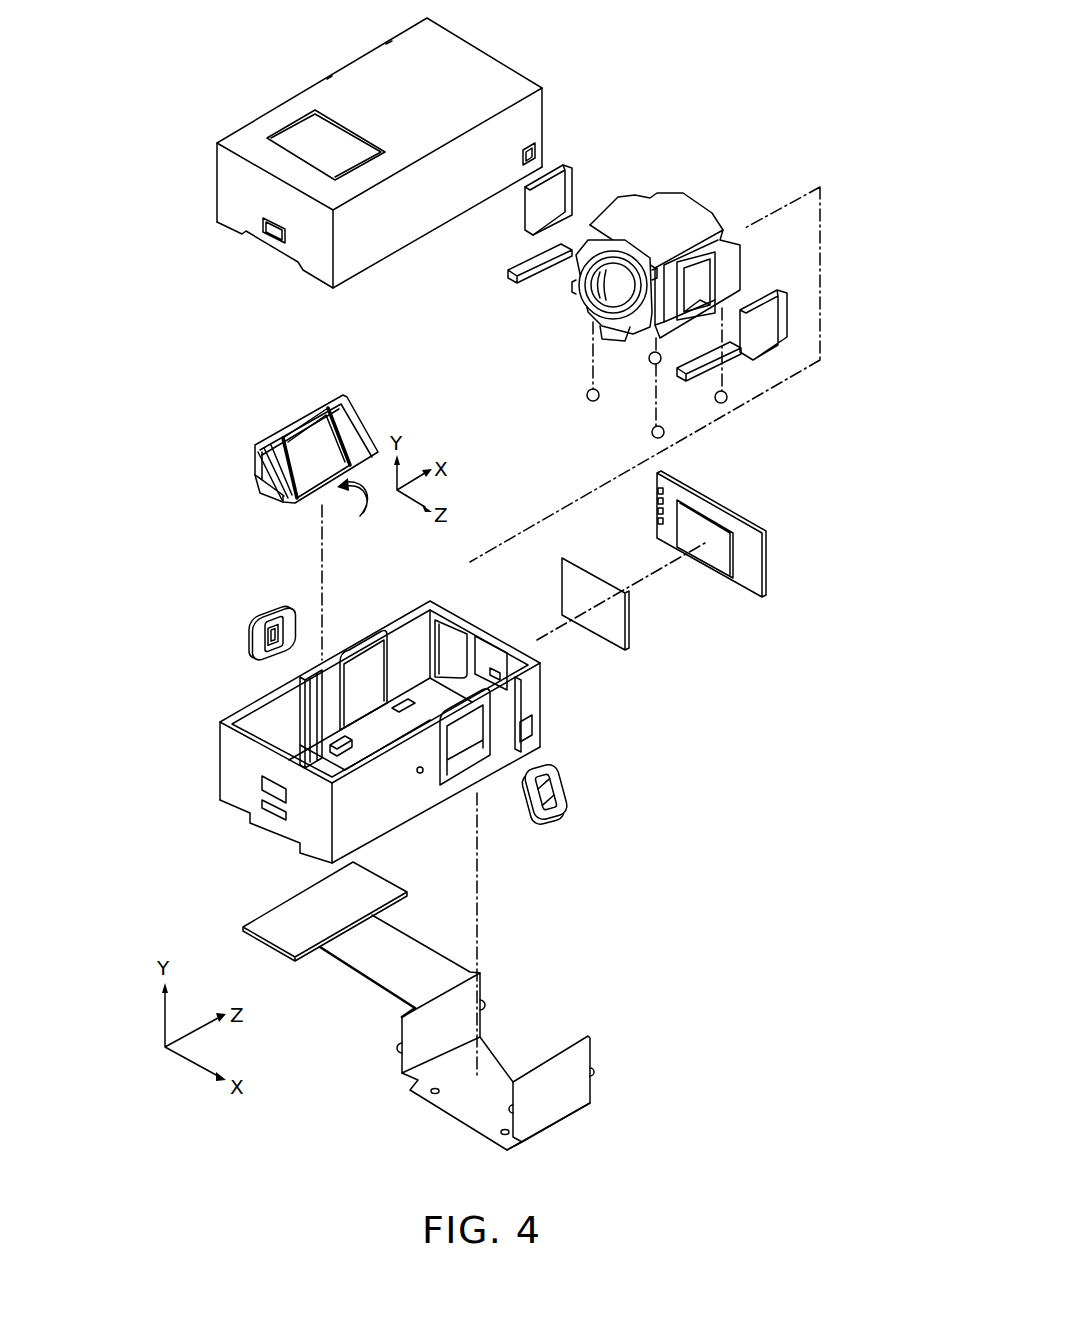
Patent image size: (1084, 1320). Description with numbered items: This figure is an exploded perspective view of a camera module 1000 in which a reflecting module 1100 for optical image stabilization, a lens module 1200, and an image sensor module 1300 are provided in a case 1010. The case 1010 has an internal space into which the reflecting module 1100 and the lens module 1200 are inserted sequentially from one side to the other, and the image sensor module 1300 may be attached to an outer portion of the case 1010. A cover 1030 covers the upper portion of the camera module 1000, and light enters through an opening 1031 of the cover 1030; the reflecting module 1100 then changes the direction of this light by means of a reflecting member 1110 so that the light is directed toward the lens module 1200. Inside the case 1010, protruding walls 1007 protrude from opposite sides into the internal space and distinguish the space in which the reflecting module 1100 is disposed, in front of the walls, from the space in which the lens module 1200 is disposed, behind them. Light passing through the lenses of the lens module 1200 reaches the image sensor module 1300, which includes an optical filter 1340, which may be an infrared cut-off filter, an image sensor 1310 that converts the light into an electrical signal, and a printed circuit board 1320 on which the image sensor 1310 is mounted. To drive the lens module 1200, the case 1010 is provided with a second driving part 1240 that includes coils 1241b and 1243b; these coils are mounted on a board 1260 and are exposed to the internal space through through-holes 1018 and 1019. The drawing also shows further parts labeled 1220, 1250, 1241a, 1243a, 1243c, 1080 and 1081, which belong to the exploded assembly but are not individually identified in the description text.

The camera module 1000 is at (192, 29).
The cover 1030 is at (503, 75).
The opening 1031 is at (316, 133).
The coil / driving member 1243a is at (558, 207).
The lens module 1200 is at (652, 170).
The lens holder 1220 is at (692, 207).
The board 1260 is at (520, 266).
The ball bearing 1250 is at (588, 394).
The magnet 1241a is at (768, 338).
The reflecting module 1100 is at (282, 401).
The holder 1080 is at (352, 428).
The reflecting member 1110 is at (290, 440).
The seating portion of holder 1081 is at (312, 440).
The coil 1243c is at (268, 608).
The coil 1243b is at (288, 628).
The case 1010 is at (228, 782).
The through-hole 1019 is at (363, 664).
The protruding walls 1007 is at (312, 712).
The through-hole 1018 is at (477, 718).
The coil 1241b is at (563, 793).
The image sensor module 1300 is at (716, 632).
The image sensor 1310 is at (737, 577).
The printed circuit board 1320 is at (757, 562).
The optical filter 1340 is at (612, 618).
The second driving part 1240 is at (826, 843).